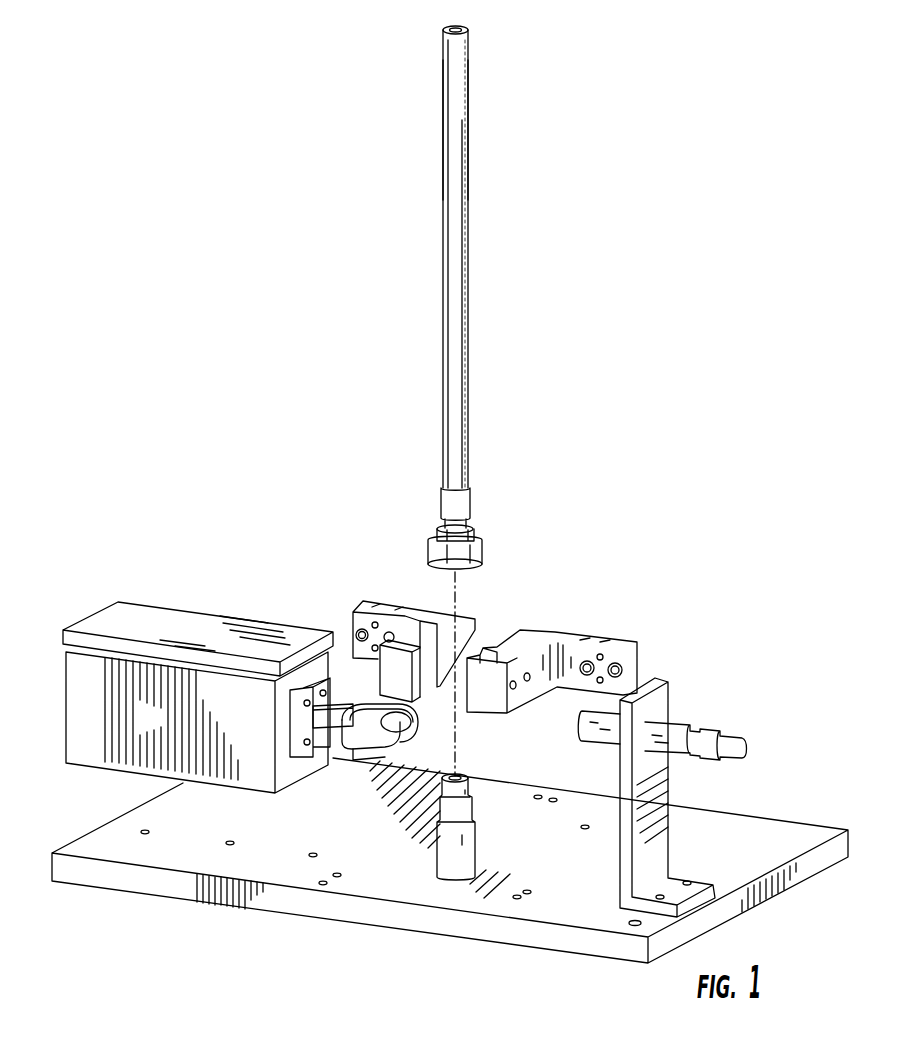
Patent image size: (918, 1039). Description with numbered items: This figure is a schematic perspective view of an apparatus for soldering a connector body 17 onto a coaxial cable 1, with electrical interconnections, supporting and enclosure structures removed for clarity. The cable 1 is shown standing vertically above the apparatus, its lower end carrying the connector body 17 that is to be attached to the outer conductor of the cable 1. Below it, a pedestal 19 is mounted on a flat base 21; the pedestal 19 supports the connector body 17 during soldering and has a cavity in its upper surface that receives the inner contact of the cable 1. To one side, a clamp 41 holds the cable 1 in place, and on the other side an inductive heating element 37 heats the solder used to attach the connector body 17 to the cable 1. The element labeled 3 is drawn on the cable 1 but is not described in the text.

The cable 1 is at (461, 268).
The tube 3 is at (457, 175).
The connector body 17 is at (460, 506).
The pedestal 19 is at (452, 858).
The base 21 is at (753, 832).
The inductive heating element 37 is at (366, 738).
The clamp 41 is at (530, 640).